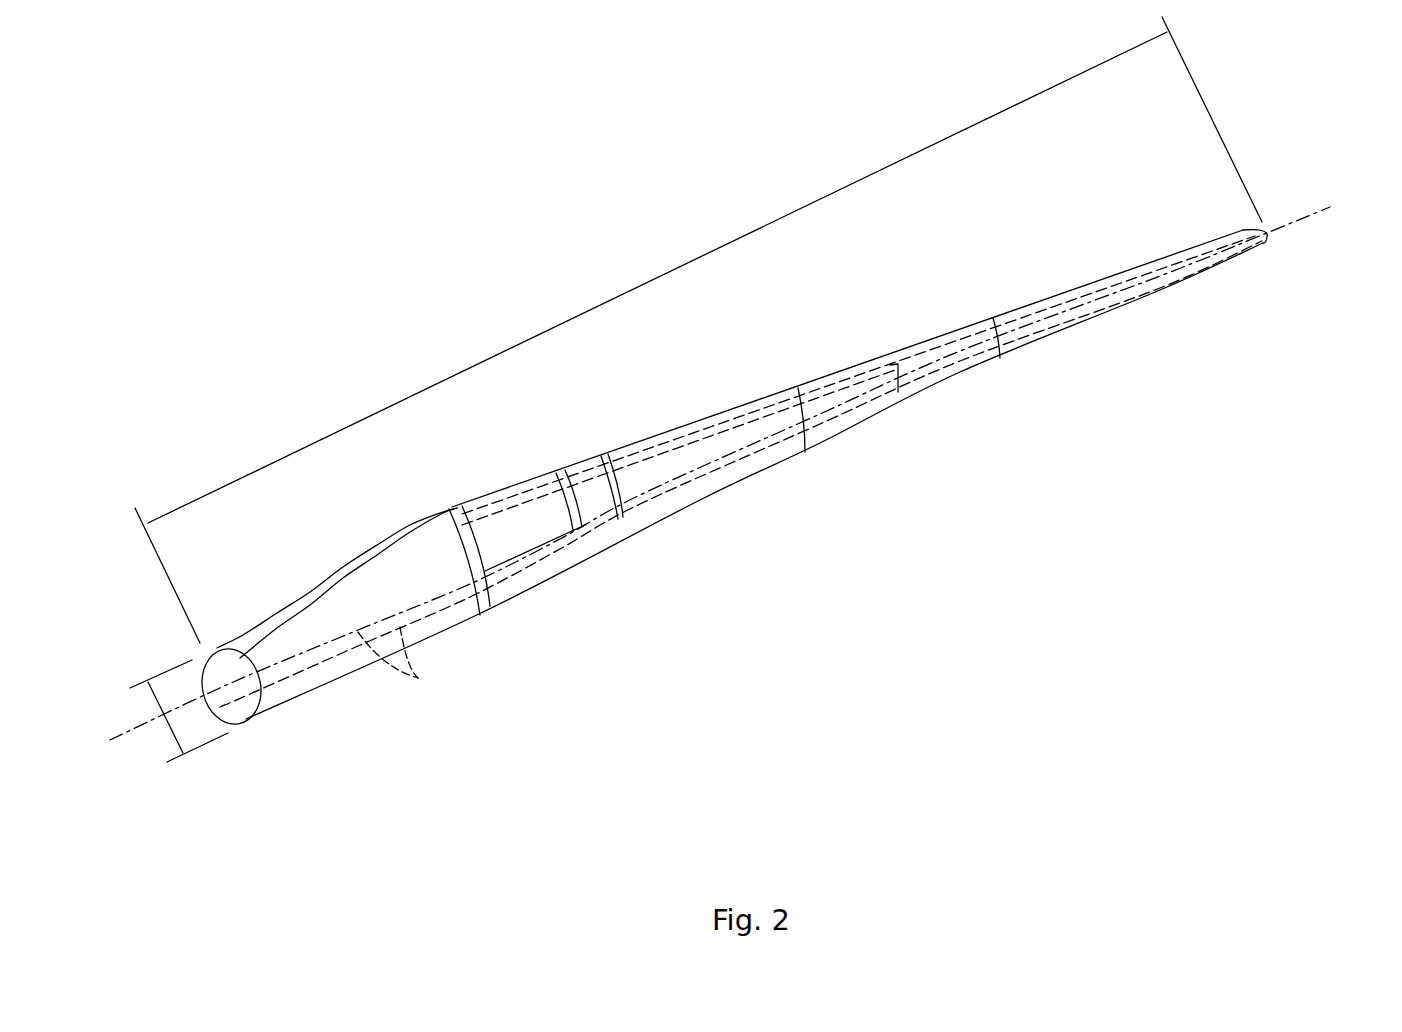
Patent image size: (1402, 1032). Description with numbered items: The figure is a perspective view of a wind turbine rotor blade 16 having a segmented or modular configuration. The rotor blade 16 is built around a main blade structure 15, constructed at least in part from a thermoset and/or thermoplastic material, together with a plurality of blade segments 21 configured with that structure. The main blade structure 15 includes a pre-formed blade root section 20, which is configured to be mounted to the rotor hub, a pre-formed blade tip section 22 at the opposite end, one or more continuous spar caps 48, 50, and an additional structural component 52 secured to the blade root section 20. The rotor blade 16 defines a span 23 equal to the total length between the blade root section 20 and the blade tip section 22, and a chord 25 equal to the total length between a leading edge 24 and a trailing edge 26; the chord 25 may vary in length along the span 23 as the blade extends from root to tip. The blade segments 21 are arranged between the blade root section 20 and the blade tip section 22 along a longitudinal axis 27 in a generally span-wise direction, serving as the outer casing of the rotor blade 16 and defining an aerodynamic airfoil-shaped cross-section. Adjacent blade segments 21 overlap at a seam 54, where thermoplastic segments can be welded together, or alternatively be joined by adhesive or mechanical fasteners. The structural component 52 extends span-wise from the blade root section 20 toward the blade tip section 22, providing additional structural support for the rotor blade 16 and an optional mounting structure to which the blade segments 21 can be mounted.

The main blade structure 15 is at (418, 678).
The rotor blade 16 is at (745, 482).
The blade root section 20 is at (243, 637).
The blade segment 21 is at (830, 436).
The blade tip section 22 is at (1140, 300).
The span 23 is at (672, 268).
The leading edge 24 is at (699, 503).
The chord 25 is at (167, 723).
The trailing edge 26 is at (727, 410).
The longitudinal axis 27 is at (1291, 224).
The continuous spar cap 48 is at (216, 680).
The continuous spar cap 50 is at (311, 665).
The additional structural component 52 is at (657, 457).
The seam 54 is at (797, 390).